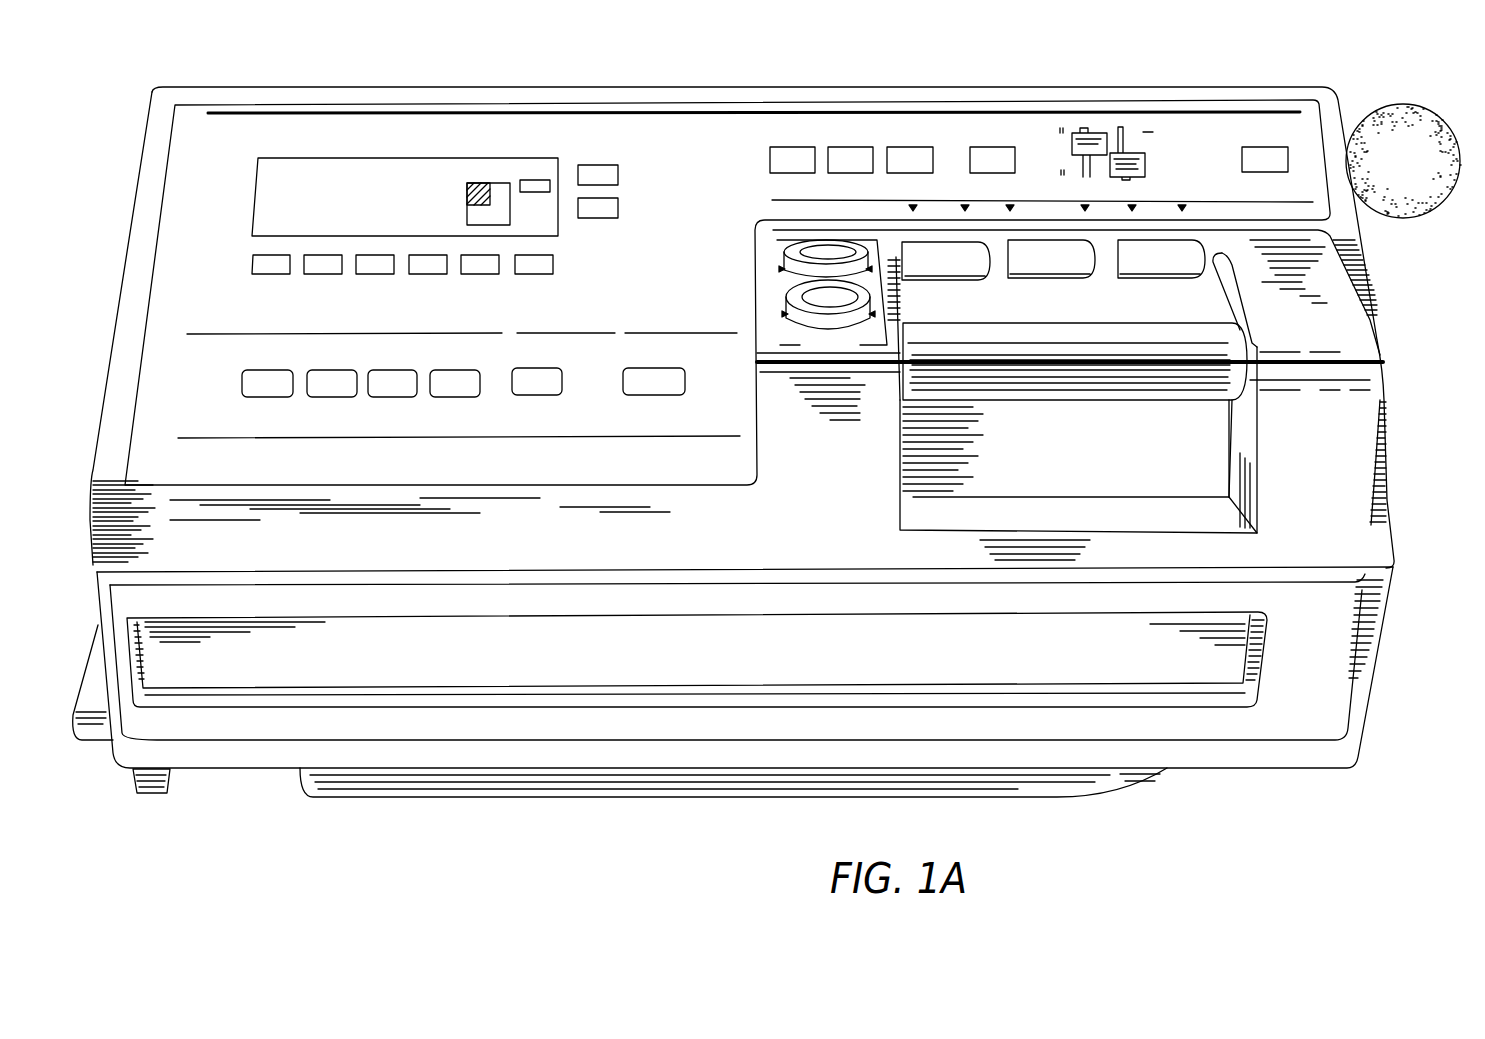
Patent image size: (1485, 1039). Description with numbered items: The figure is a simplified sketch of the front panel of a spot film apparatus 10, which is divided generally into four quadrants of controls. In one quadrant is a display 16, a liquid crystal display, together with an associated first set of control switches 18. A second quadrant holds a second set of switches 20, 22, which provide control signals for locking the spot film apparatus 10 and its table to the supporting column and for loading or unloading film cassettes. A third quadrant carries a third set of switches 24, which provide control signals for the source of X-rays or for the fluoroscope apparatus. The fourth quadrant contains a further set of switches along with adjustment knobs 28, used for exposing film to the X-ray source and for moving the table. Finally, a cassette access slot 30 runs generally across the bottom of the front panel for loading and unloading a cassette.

The spot film apparatus 10 is at (1174, 81).
The display 16 is at (398, 158).
The control switches 18 is at (592, 218).
The switches 20 is at (522, 395).
The switches 22 is at (628, 395).
The switches 24 is at (1107, 173).
The adjustment knobs 28 is at (790, 275).
The cassette access slot 30 is at (800, 659).